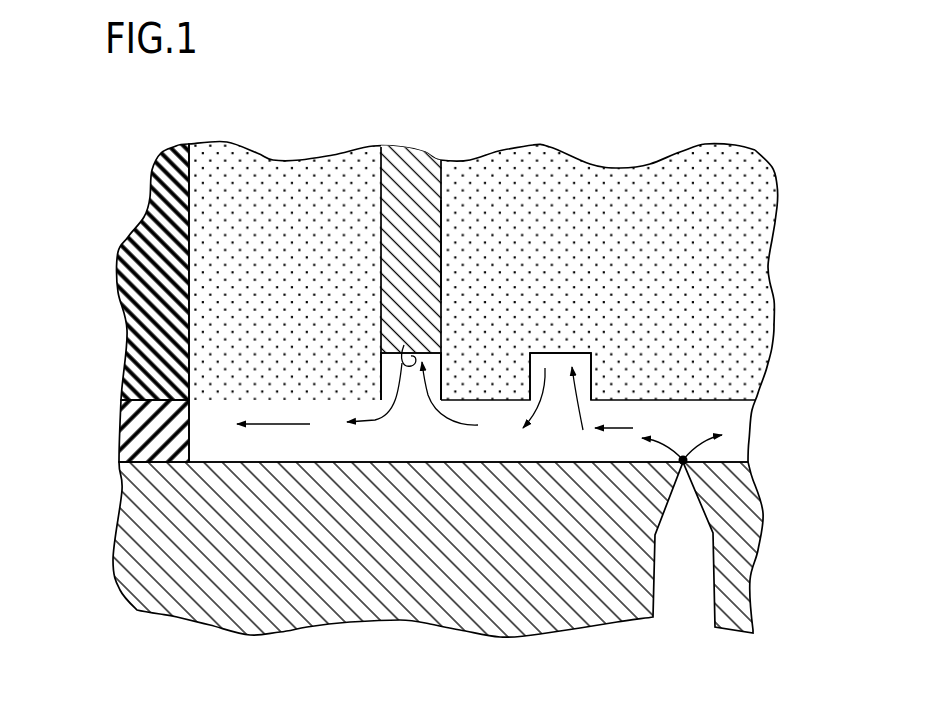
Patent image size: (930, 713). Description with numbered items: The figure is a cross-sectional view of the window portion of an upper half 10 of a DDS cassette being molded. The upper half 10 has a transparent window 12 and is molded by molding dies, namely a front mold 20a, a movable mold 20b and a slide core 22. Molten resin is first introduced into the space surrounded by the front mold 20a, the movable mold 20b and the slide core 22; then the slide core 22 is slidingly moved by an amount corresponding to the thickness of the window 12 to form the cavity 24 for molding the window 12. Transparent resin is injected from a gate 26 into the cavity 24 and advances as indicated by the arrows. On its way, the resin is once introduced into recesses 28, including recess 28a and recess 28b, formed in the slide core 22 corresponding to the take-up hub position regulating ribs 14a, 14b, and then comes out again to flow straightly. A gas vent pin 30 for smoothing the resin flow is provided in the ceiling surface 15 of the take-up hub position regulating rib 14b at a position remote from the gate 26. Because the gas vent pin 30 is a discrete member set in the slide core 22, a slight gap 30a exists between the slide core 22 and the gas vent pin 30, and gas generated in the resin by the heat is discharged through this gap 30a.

The upper half 10 is at (122, 433).
The transparent window 12 is at (205, 418).
The take-up hub position regulating rib 14a is at (663, 55).
The take-up hub position regulating rib 14b is at (387, 377).
The ceiling surface 15 is at (404, 345).
The front mold 20a is at (330, 610).
The movable mold 20b is at (130, 330).
The slide core 22 is at (305, 200).
The cavity 24 is at (482, 445).
The gate 26 is at (683, 460).
The recesses 28 is at (627, 258).
The recess 28a is at (545, 353).
The recess 28b is at (445, 360).
The gas vent pin 30 is at (402, 177).
The gap 30a is at (445, 235).